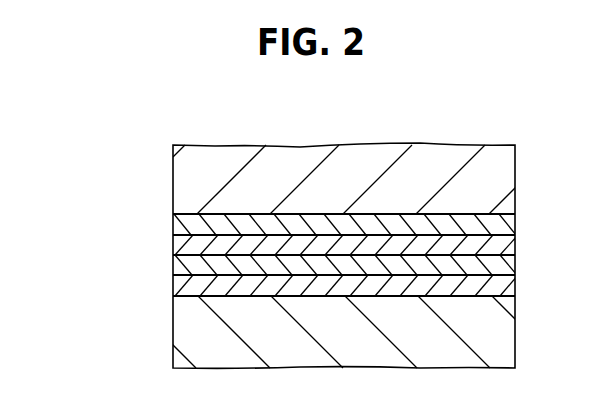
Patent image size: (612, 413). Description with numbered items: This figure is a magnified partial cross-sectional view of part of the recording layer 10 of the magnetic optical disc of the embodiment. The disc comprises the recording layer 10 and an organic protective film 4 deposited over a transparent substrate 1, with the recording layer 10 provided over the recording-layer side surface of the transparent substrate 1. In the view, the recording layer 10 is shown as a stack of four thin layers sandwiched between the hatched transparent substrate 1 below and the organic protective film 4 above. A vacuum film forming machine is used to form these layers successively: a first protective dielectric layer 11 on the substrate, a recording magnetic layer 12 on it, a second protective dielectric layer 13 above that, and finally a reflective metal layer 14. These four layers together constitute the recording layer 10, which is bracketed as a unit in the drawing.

The transparent substrate 1 is at (181, 348).
The organic protective film 4 is at (182, 172).
The recording layer 10 is at (118, 204).
The first protective dielectric layer 11 is at (180, 289).
The recording magnetic layer 12 is at (181, 268).
The second protective dielectric layer 13 is at (181, 246).
The reflective metal layer 14 is at (181, 221).